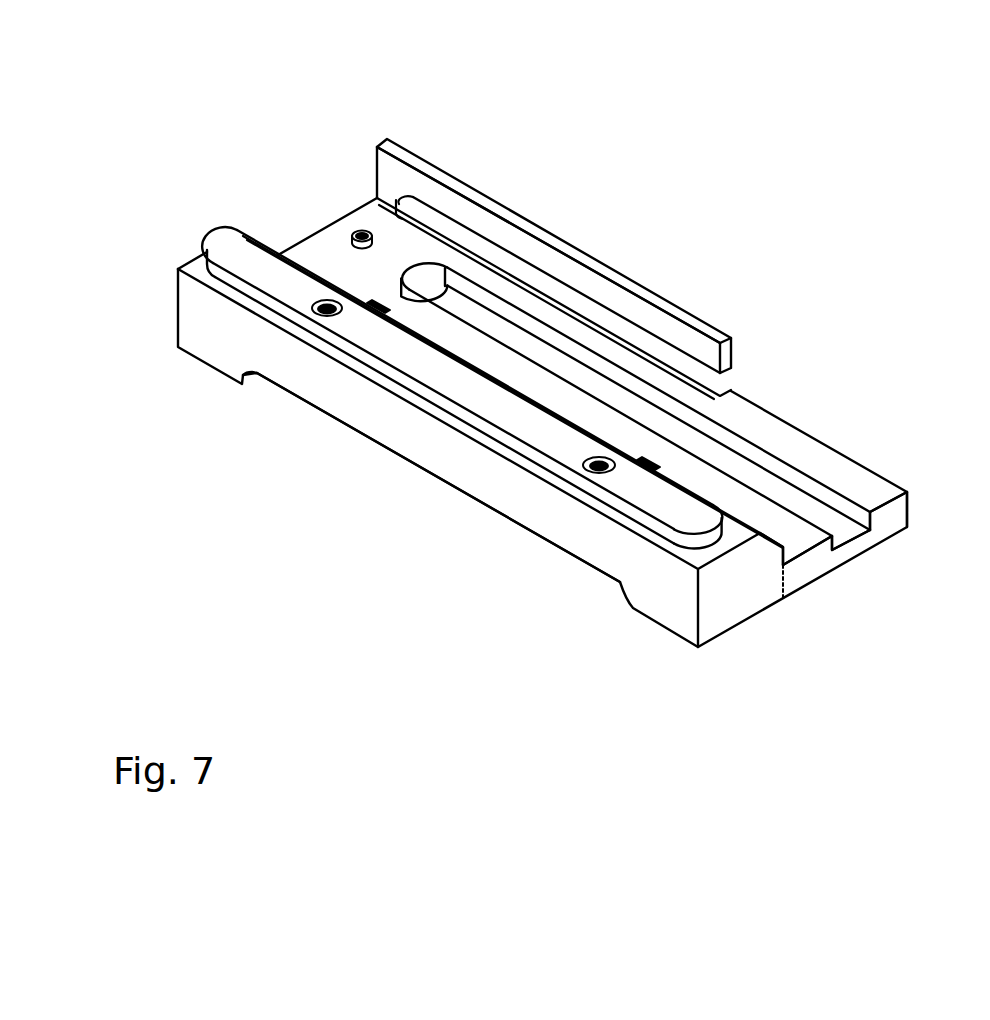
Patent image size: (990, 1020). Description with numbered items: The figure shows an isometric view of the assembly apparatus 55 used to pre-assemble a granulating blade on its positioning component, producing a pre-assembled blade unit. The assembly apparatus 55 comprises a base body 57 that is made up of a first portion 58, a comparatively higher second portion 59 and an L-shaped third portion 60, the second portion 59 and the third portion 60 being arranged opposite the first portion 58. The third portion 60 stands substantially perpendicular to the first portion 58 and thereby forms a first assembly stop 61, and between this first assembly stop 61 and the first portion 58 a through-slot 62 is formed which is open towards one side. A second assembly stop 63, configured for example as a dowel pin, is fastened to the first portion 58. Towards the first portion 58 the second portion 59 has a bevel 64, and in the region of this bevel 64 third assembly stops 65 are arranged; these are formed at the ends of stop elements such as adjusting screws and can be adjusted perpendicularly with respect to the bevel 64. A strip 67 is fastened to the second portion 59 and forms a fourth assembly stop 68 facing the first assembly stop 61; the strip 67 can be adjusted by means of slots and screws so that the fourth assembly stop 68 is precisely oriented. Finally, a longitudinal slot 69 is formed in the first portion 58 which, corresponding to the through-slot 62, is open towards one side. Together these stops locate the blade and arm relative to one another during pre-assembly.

The assembly apparatus 55 is at (660, 245).
The base body 57 is at (519, 530).
The first portion 58 is at (802, 577).
The second portion 59 is at (734, 608).
The third portion 60 is at (402, 147).
The first assembly stop 61 is at (550, 262).
The through-slot 62 is at (710, 379).
The second assembly stop 63 is at (358, 228).
The bevel 64 is at (778, 541).
The third assembly stops 65 is at (360, 305).
The strip 67 is at (440, 375).
The fourth assembly stop 68 is at (262, 247).
The longitudinal slot 69 is at (843, 533).